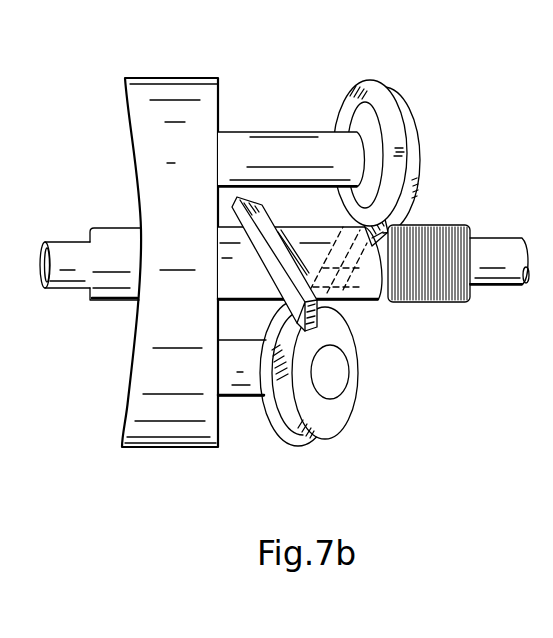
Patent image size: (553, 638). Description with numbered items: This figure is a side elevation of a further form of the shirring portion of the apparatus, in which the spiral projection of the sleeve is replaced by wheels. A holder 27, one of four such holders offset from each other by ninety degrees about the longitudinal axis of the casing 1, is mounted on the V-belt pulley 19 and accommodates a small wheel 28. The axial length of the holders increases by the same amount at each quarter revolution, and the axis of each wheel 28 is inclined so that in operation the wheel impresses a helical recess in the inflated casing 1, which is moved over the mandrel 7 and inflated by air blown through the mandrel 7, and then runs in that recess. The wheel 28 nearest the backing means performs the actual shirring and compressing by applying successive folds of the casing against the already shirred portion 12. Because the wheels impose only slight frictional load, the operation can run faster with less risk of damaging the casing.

The V-belt pulley 19 is at (158, 87).
The casing 1 is at (98, 238).
The holder 27 is at (275, 140).
The wheel 28 is at (395, 108).
The shirred portion 12 is at (462, 230).
The mandrel 7 is at (502, 278).